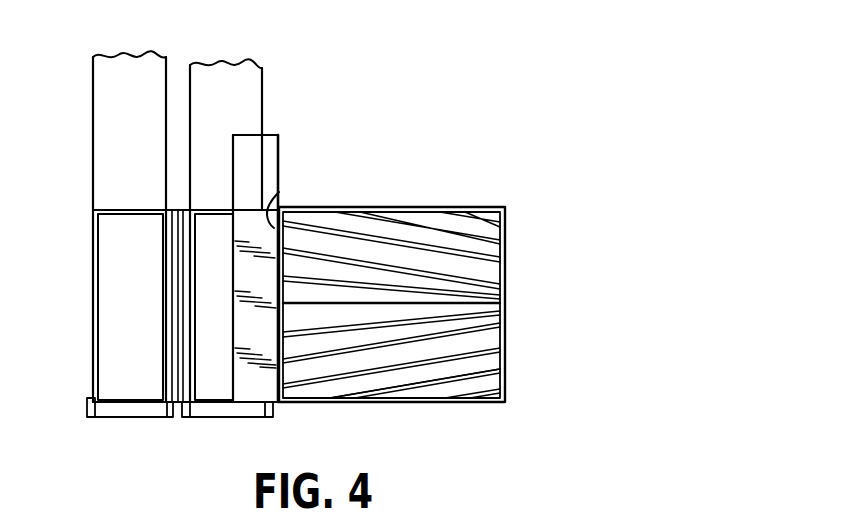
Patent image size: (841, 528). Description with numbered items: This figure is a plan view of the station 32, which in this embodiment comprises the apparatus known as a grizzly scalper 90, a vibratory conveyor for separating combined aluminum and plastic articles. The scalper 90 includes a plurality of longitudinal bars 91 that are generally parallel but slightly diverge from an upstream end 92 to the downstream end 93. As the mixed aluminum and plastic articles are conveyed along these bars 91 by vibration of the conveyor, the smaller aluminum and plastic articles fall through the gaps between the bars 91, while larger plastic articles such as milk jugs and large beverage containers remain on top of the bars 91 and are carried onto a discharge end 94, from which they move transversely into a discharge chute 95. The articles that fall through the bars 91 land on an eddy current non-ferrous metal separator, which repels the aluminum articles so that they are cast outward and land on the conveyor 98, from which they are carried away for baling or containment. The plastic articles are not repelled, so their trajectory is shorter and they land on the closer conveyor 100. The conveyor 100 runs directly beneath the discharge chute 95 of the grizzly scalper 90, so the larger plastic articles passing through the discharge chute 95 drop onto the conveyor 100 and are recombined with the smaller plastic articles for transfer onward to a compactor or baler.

The station 32 is at (355, 167).
The grizzly scalper 90 is at (447, 207).
The longitudinal bars 91 is at (408, 385).
The upstream end 92 is at (507, 292).
The downstream end 93 is at (279, 192).
The discharge end 94 is at (236, 341).
The discharge chute 95 is at (255, 155).
The conveyor 98 is at (100, 146).
The conveyor 100 is at (232, 84).